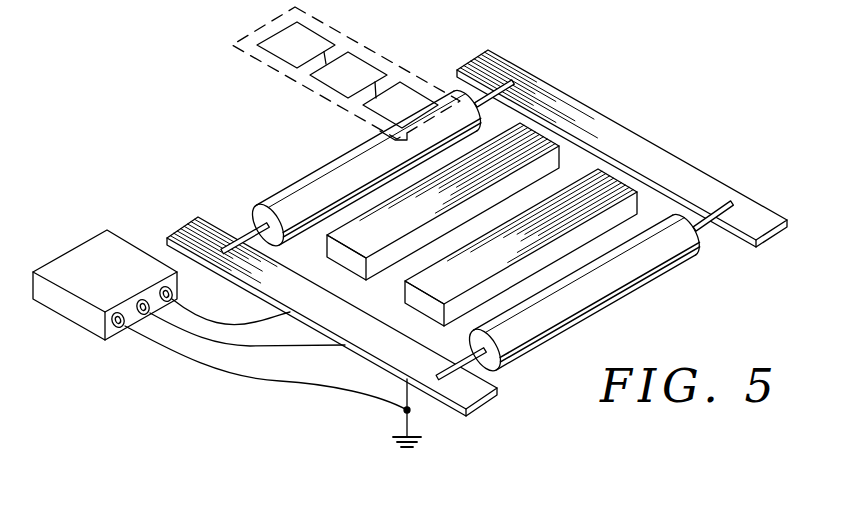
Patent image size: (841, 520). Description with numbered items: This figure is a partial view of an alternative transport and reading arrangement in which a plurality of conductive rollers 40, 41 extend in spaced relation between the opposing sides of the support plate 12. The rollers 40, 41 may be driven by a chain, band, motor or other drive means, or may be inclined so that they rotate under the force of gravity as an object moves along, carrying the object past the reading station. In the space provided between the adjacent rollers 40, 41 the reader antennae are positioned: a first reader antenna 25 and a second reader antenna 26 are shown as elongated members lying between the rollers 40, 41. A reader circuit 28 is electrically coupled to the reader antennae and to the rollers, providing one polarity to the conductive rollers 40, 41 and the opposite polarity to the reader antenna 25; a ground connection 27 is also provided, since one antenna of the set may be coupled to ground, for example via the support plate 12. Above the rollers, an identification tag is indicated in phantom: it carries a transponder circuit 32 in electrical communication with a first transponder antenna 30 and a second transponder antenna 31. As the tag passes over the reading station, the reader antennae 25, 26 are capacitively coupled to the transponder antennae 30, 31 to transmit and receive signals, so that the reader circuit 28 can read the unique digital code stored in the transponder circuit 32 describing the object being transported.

The support plate 12 is at (194, 229).
The first reader antenna 25 is at (530, 138).
The second reader antenna 26 is at (605, 190).
The third reader antenna 27 is at (409, 410).
The reader circuit 28 is at (82, 255).
The first transponder antenna 30 is at (277, 55).
The second transponder antenna 31 is at (362, 107).
The transponder circuit 32 is at (356, 62).
The conductive roller 40 is at (318, 186).
The conductive roller 41 is at (657, 266).